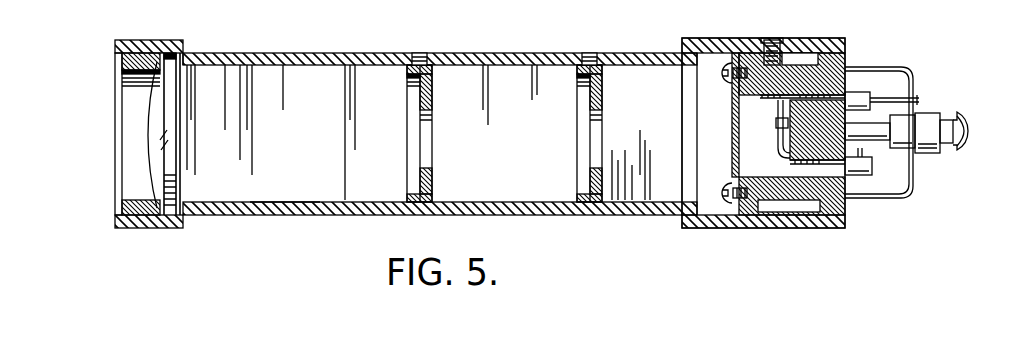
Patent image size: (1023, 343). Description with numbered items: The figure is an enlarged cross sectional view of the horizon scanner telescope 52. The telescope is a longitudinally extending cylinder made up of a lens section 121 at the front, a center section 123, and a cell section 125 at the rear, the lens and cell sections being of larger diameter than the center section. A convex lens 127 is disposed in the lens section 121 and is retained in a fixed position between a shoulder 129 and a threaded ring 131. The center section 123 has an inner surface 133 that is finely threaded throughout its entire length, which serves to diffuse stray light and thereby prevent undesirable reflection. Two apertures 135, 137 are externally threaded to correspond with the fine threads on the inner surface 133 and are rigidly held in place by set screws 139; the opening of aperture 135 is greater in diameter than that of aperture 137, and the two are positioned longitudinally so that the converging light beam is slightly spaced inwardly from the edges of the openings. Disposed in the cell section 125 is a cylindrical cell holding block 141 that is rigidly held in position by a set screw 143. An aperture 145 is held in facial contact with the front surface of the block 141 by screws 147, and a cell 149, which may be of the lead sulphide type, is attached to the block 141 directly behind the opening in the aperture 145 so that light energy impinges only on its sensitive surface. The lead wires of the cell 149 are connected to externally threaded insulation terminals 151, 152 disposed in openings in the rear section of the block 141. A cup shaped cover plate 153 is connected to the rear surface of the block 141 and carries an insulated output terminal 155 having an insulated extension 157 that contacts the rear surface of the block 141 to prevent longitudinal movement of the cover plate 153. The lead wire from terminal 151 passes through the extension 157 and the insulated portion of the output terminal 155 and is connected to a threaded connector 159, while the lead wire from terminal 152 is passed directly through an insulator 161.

The horizon scanner telescope 52 is at (553, 232).
The lens section 121 is at (157, 226).
The center section 123 is at (356, 212).
The cell section 125 is at (770, 222).
The convex lens 127 is at (157, 110).
The shoulder 129 is at (184, 60).
The threaded ring 131 is at (127, 210).
The inner surface 133 is at (279, 202).
The aperture 135 is at (433, 185).
The aperture 137 is at (603, 100).
The set screws 139 is at (419, 55).
The cell holding block 141 is at (827, 203).
The set screw 143 is at (771, 50).
The aperture 145 is at (732, 105).
The screws 147 is at (727, 200).
The cell 149 is at (778, 130).
The insulation terminal 151 is at (853, 176).
The insulation terminal 152 is at (849, 94).
The cover plate 153 is at (900, 68).
The output terminal 155 is at (927, 155).
The insulated extension 157 is at (855, 128).
The threaded connector 159 is at (966, 135).
The insulator 161 is at (905, 98).